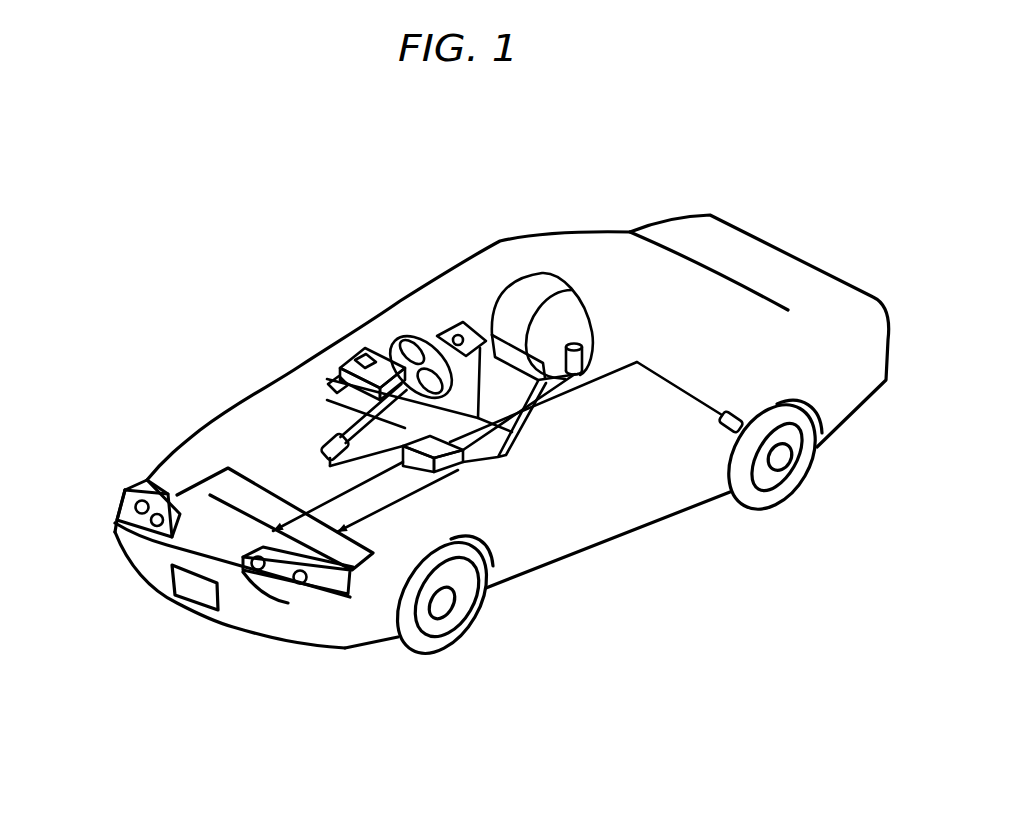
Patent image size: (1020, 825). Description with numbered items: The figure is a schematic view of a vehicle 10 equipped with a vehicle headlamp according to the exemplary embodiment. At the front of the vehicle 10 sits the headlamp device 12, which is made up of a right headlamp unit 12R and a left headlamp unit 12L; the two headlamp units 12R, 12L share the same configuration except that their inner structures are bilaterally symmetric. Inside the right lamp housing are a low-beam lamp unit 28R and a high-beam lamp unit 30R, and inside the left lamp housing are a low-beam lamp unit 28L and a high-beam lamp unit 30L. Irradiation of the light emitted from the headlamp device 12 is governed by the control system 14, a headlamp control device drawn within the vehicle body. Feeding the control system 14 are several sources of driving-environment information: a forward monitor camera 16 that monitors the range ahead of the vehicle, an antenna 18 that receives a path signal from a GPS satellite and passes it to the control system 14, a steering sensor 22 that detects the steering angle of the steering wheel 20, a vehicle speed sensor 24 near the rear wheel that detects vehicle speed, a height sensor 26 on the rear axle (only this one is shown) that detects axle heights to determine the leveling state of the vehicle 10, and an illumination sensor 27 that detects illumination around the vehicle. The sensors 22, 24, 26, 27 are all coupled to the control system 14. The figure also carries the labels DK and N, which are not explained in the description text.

The vehicle 10 is at (744, 227).
The headlamp device 12 is at (223, 635).
The right headlamp unit 12R is at (158, 488).
The left headlamp unit 12L is at (334, 578).
The low-beam lamp unit 28R is at (118, 520).
The low-beam lamp unit 28L is at (300, 585).
The high-beam lamp unit 30R is at (150, 536).
The high-beam lamp unit 30L is at (258, 572).
The control system 14 is at (462, 462).
The forward monitor camera 16 is at (465, 322).
The antenna 18 is at (328, 378).
The steering wheel 20 is at (427, 337).
The steering sensor 22 is at (325, 434).
The vehicle speed sensor 24 is at (725, 430).
The height sensor 26 is at (584, 355).
The illumination sensor 27 is at (360, 358).
The distance DK is at (338, 496).
The distance N is at (397, 502).